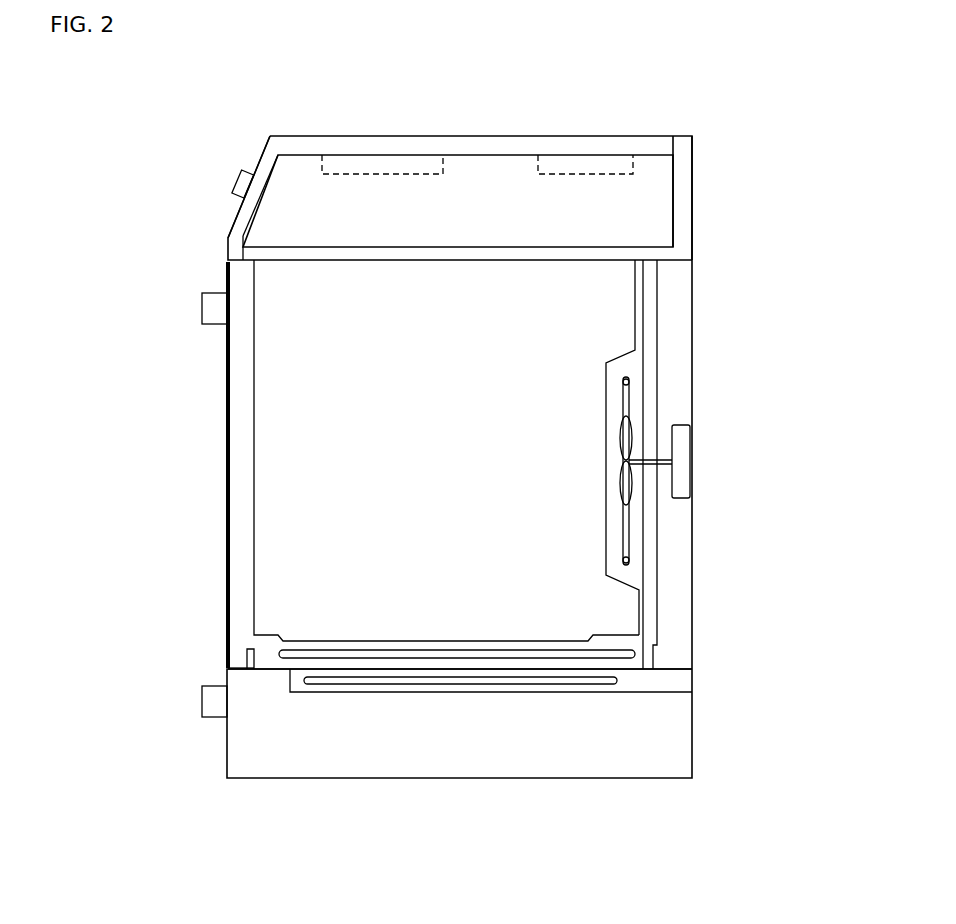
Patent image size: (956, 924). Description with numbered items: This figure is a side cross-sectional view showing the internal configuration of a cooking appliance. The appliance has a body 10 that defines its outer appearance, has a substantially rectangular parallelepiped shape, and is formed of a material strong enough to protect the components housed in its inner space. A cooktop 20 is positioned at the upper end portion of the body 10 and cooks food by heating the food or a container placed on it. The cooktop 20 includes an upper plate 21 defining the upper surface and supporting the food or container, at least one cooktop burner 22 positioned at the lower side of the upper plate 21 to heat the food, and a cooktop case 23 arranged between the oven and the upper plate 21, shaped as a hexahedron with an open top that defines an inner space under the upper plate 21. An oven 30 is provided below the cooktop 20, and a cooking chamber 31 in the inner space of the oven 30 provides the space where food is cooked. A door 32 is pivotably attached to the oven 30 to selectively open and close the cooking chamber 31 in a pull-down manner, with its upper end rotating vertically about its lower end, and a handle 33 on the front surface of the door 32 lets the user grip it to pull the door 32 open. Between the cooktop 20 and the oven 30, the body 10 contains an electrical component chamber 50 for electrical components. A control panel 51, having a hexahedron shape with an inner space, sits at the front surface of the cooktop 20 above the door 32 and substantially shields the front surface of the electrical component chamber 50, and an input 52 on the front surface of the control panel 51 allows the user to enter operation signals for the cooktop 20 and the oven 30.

The body 10 is at (700, 266).
The cooktop 20 is at (441, 136).
The upper plate 21 is at (527, 148).
The cooktop burner 22 is at (597, 174).
The cooktop case 23 is at (680, 198).
The oven 30 is at (226, 464).
The cooking chamber 31 is at (460, 452).
The door 32 is at (228, 588).
The handle 33 is at (210, 308).
The electrical component chamber 50 is at (485, 223).
The control panel 51 is at (262, 153).
The input 52 is at (236, 189).